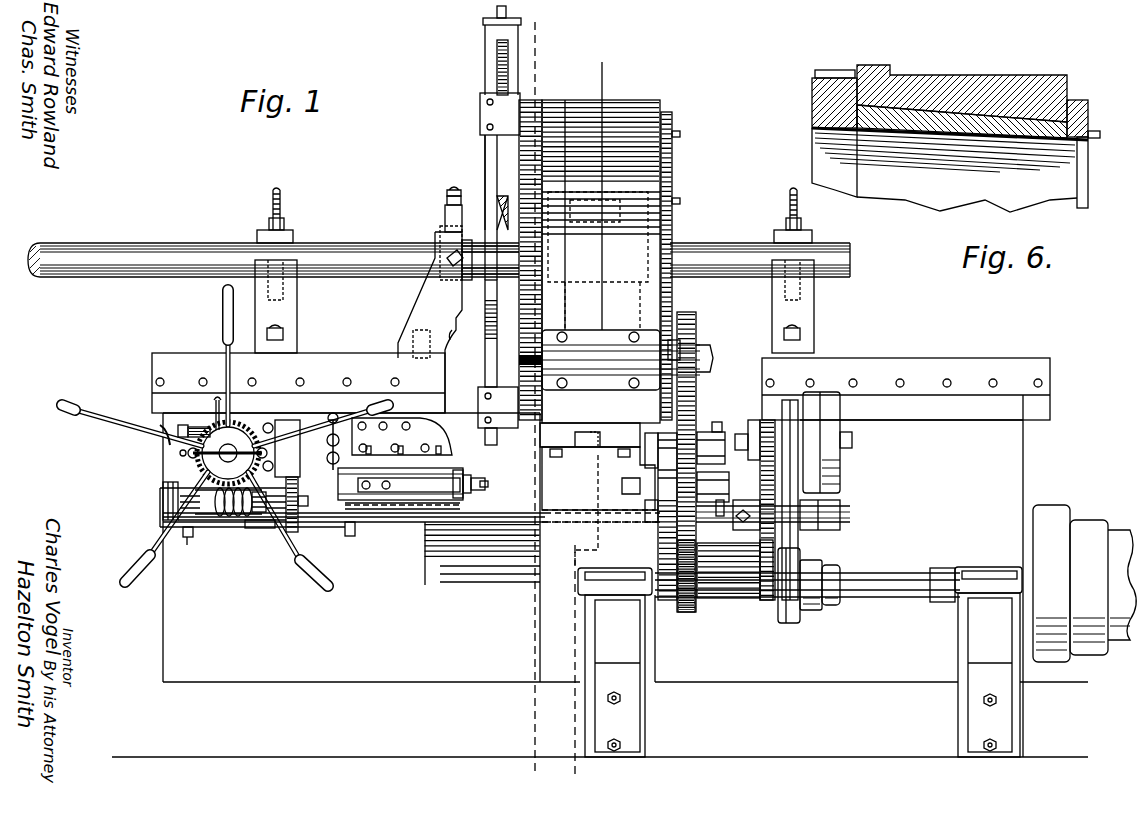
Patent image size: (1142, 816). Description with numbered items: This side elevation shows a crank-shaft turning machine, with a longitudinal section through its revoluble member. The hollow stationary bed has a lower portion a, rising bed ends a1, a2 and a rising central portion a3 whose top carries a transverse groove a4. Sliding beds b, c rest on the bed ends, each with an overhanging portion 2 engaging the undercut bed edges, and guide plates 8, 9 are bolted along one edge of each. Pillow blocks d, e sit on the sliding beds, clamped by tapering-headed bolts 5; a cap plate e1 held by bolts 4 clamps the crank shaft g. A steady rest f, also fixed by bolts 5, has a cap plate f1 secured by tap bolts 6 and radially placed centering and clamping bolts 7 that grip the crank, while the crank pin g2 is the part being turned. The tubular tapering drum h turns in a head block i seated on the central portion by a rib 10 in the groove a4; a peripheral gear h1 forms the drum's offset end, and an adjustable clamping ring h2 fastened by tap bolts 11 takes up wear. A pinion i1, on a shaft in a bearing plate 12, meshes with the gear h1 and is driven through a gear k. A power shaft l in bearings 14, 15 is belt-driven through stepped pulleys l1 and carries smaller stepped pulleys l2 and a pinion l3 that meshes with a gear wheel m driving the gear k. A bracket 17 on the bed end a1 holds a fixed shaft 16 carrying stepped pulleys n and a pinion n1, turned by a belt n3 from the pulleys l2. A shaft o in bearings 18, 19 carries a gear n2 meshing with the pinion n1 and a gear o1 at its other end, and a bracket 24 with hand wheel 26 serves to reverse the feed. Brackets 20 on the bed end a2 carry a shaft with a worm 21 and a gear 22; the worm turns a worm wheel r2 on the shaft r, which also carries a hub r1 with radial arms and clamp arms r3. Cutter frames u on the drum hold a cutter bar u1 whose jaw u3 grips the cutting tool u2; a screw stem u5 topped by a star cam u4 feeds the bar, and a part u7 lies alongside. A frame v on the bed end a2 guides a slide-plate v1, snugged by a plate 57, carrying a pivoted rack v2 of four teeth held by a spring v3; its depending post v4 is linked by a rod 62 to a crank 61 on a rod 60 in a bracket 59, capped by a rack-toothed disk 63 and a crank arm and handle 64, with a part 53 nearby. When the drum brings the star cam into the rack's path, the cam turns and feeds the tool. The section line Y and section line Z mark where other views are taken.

In FIG. 1, the lower portion of stationary bed a is at (600, 719).
In FIG. 1, the rising bed end a1 is at (911, 576).
In FIG. 1, the rising bed end a2 is at (351, 547).
In FIG. 1, the rising central portion a3 is at (601, 506).
In FIG. 1, the transverse groove a4 is at (590, 435).
In FIG. 1, the sliding bed b is at (906, 389).
In FIG. 1, the sliding bed c is at (298, 383).
In FIG. 1, the pillow block d is at (805, 297).
In FIG. 1, the pillow block e is at (288, 292).
In FIG. 1, the cap plate e1 is at (293, 236).
In FIG. 1, the steady rest f is at (430, 309).
In FIG. 1, the cap plate f1 is at (444, 214).
In FIG. 1, the crank shaft g is at (366, 246).
In FIG. 1, the crank pin g2 is at (500, 275).
In FIG. 6, the drum h is at (812, 110).
In FIG. 1, the peripheral gear h1 is at (537, 100).
In FIG. 6, the peripheral gear h1 is at (832, 70).
In FIG. 1, the adjustable clamping ring h2 is at (674, 178).
In FIG. 6, the adjustable clamping ring h2 is at (1080, 100).
In FIG. 1, the head block i is at (626, 104).
In FIG. 6, the head block i is at (942, 70).
In FIG. 1, the pinion i1 is at (518, 362).
In FIG. 1, the gear k is at (698, 326).
In FIG. 1, the power shaft l is at (884, 578).
In FIG. 1, the stepped-pulleys l1 is at (1084, 567).
In FIG. 1, the smaller stepped-pulleys l2 is at (810, 612).
In FIG. 1, the pinion l3 is at (686, 614).
In FIG. 1, the gear wheel m is at (700, 426).
In FIG. 1, the stepped-pulleys n is at (842, 462).
In FIG. 1, the pinion n1 is at (762, 420).
In FIG. 1, the gear n2 is at (766, 572).
In FIG. 1, the belt n3 is at (790, 626).
In FIG. 1, the shaft o is at (500, 512).
In FIG. 1, the gear o1 is at (722, 518).
In FIG. 1, the shaft r is at (228, 464).
In FIG. 1, the hub with radial arms r1 is at (228, 453).
In FIG. 1, the worm wheel r2 is at (200, 462).
In FIG. 1, the clamp arms r3 is at (195, 454).
In FIG. 1, the cutter frames u is at (479, 114).
In FIG. 1, the cutter bar u1 is at (484, 156).
In FIG. 1, the cutting tool u2 is at (484, 248).
In FIG. 1, the jaw u3 is at (508, 213).
In FIG. 1, the star cam u4 is at (482, 21).
In FIG. 1, the screw stem u5 is at (496, 66).
In FIG. 1, the bar u7 is at (484, 370).
In FIG. 1, the frame v is at (402, 436).
In FIG. 1, the slide-plate v1 is at (345, 484).
In FIG. 1, the pivot rack v2 is at (486, 484).
In FIG. 1, the spring v3 is at (412, 492).
In FIG. 1, the depending post v4 is at (356, 530).
In FIG. 1, the overhanging portion 2 is at (605, 405).
In FIG. 1, the bolts 4 is at (282, 203).
In FIG. 1, the bolts with tapering heads 5 is at (285, 332).
In FIG. 1, the tap bolts 6 is at (447, 191).
In FIG. 1, the centering and clamping bolts 7 is at (454, 196).
In FIG. 1, the guide plate 8 is at (975, 372).
In FIG. 1, the guide plate 9 is at (223, 388).
In FIG. 1, the rib 10 is at (592, 430).
In FIG. 1, the tap bolts 11 is at (672, 314).
In FIG. 6, the tap bolts 11 is at (1098, 138).
In FIG. 1, the bearing plate 12 is at (605, 358).
In FIG. 1, the bearing 14 is at (994, 572).
In FIG. 1, the bearing 15 is at (616, 576).
In FIG. 1, the fixed shaft 16 is at (853, 440).
In FIG. 1, the bracket 17 is at (752, 428).
In FIG. 1, the bearing 18 is at (826, 532).
In FIG. 1, the bearing 19 is at (262, 530).
In FIG. 1, the brackets 20 is at (252, 514).
In FIG. 1, the worm 21 is at (226, 518).
In FIG. 1, the gear 22 is at (300, 528).
In FIG. 1, the bracket 24 is at (281, 448).
In FIG. 1, the hand wheel 26 is at (328, 433).
In FIG. 1, the screws 53 is at (403, 442).
In FIG. 1, the plate 57 is at (458, 469).
In FIG. 1, the bracket 59 is at (165, 516).
In FIG. 1, the rod 60 is at (177, 448).
In FIG. 1, the crank 61 is at (184, 546).
In FIG. 1, the rod 62 is at (250, 530).
In FIG. 1, the disk 63 is at (149, 424).
In FIG. 1, the crank arm and handle 64 is at (198, 426).
In FIG. 1, the section line Y is at (575, 38).
In FIG. 1, the section line Z is at (575, 72).